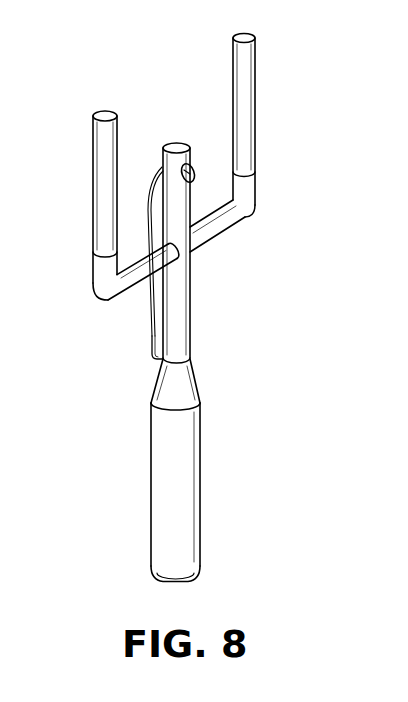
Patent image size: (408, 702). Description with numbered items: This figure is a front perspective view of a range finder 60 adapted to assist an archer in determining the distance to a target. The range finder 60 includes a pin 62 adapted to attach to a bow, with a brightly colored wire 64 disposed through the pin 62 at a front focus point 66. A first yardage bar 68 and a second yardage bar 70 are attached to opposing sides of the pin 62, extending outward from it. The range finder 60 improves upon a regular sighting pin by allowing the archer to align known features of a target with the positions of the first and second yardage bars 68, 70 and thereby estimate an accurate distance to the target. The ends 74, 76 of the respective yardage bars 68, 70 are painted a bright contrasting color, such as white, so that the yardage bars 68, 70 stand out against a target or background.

The range finder 60 is at (324, 91).
The pin 62 is at (190, 320).
The brightly colored wire 64 is at (150, 313).
The front focus point 66 is at (196, 163).
The first yardage bar 68 is at (97, 284).
The second yardage bar 70 is at (255, 208).
The end of first yardage bar 74 is at (92, 189).
The end of second yardage bar 76 is at (258, 63).